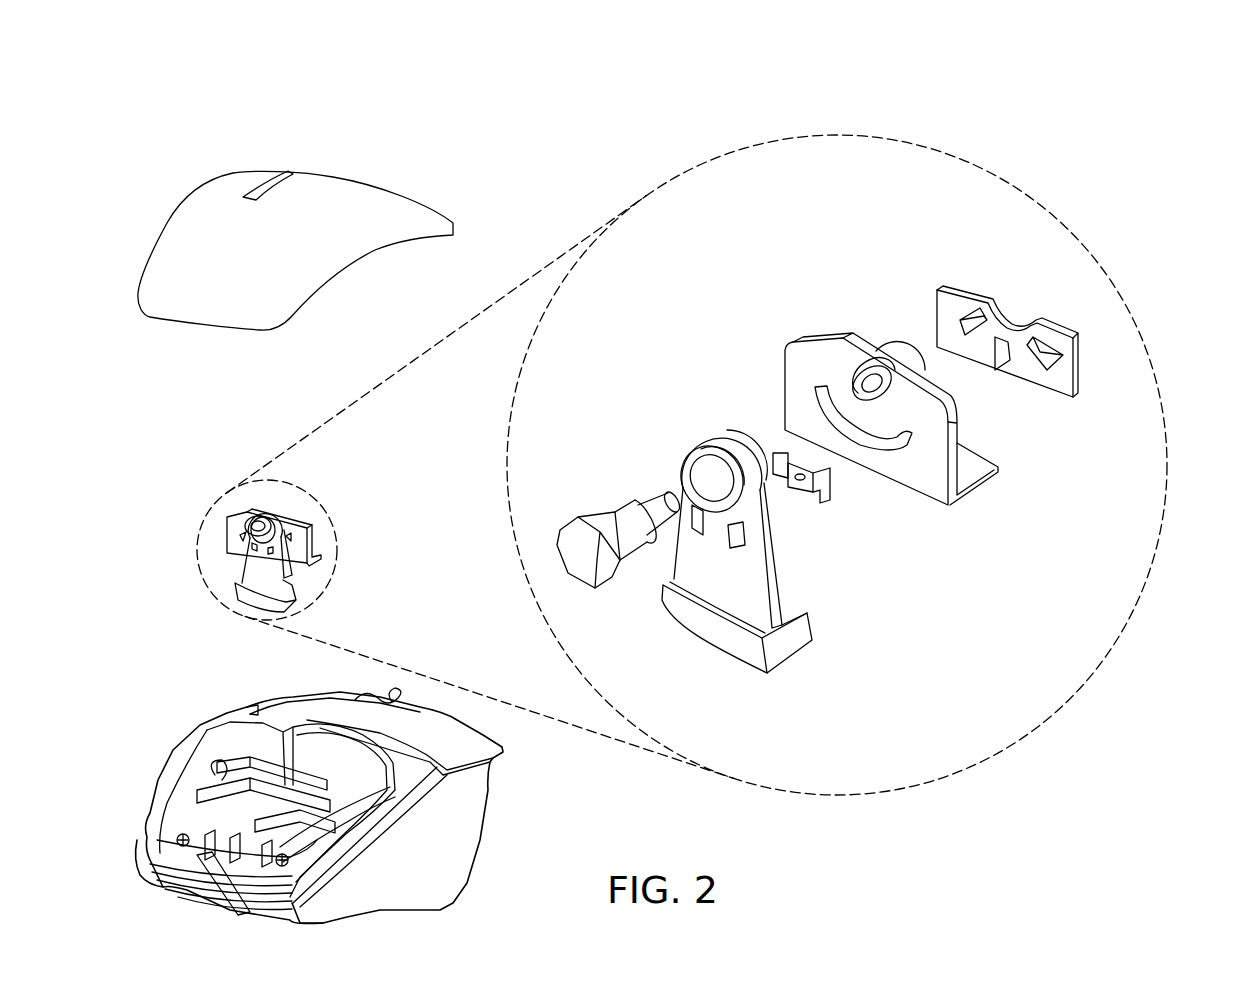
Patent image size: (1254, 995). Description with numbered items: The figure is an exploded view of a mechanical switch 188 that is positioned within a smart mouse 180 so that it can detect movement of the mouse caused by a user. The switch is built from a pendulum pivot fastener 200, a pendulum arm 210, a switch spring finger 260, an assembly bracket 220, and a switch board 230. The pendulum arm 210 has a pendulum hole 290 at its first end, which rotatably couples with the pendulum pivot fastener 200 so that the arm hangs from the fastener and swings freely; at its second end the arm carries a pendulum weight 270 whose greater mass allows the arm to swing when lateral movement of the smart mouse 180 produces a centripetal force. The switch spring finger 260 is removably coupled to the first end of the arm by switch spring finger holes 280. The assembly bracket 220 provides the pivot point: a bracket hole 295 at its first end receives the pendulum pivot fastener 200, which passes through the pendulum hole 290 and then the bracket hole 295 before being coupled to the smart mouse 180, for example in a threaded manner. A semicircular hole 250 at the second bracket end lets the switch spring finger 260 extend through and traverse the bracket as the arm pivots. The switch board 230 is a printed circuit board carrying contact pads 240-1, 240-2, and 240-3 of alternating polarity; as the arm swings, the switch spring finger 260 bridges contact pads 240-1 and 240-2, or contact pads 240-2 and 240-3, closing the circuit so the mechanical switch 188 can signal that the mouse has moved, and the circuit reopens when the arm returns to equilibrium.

The smart mouse 180 is at (213, 110).
The mechanical switch 188 is at (745, 240).
The pendulum pivot fastener 200 is at (600, 508).
The pendulum arm 210 is at (685, 425).
The assembly bracket 220 is at (783, 322).
The switch board 230 is at (1010, 313).
The contact pad 240-1 is at (952, 317).
The contact pad 240-2 is at (1000, 357).
The contact pad 240-3 is at (1042, 355).
The semicircular hole 250 is at (900, 455).
The switch spring finger 260 is at (835, 502).
The pendulum weight 270 is at (803, 670).
The switch spring finger holes 280 is at (692, 520).
The pendulum hole 290 is at (688, 458).
The bracket hole 295 is at (843, 380).